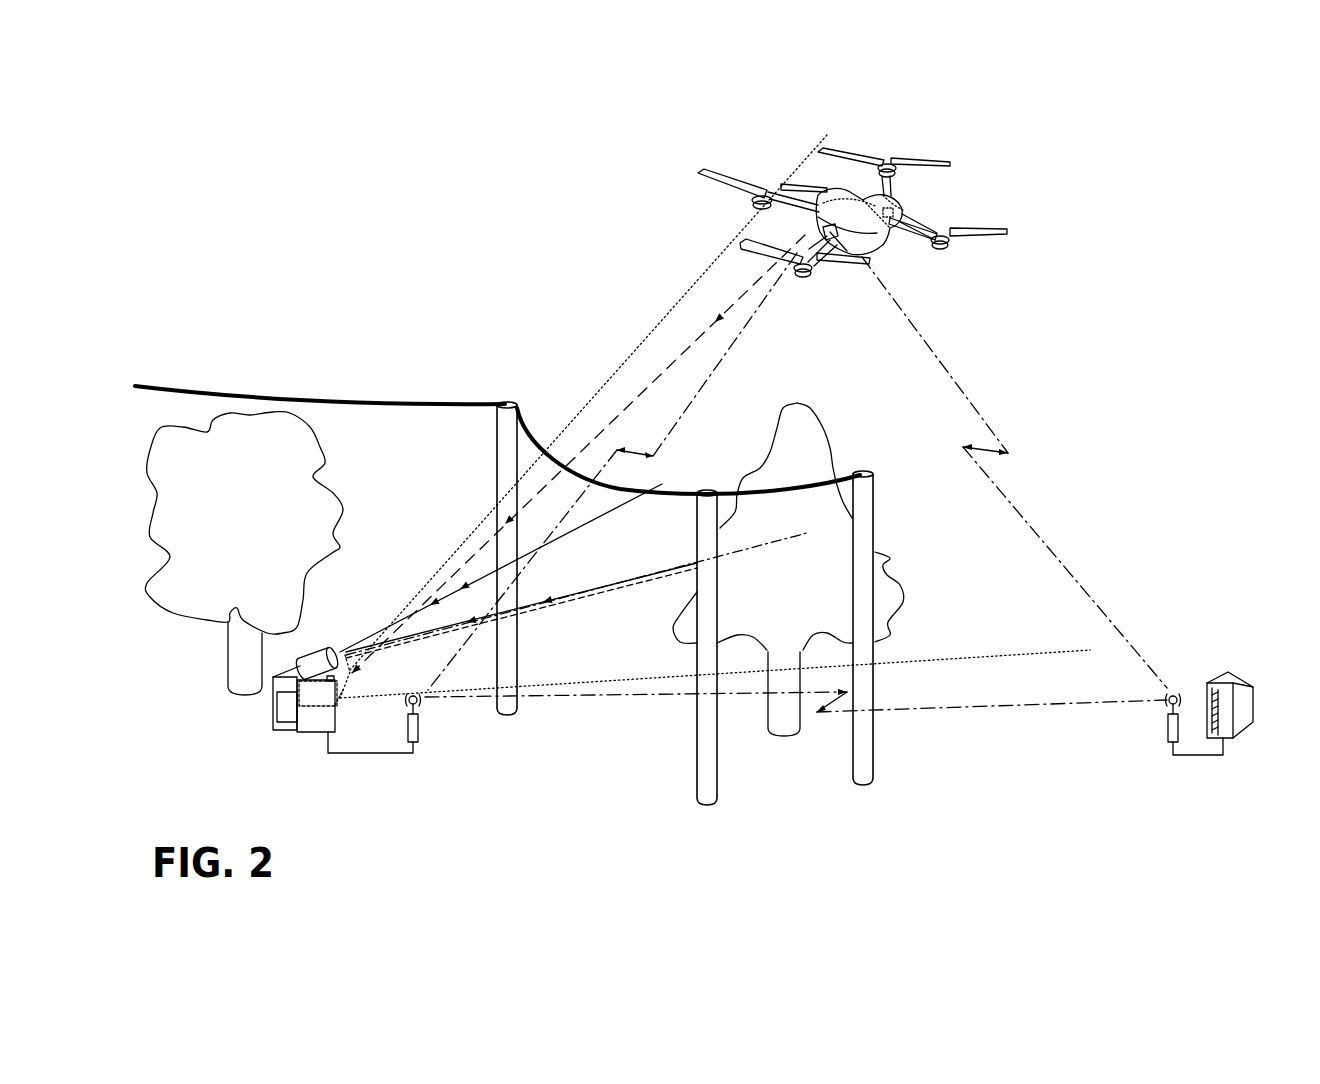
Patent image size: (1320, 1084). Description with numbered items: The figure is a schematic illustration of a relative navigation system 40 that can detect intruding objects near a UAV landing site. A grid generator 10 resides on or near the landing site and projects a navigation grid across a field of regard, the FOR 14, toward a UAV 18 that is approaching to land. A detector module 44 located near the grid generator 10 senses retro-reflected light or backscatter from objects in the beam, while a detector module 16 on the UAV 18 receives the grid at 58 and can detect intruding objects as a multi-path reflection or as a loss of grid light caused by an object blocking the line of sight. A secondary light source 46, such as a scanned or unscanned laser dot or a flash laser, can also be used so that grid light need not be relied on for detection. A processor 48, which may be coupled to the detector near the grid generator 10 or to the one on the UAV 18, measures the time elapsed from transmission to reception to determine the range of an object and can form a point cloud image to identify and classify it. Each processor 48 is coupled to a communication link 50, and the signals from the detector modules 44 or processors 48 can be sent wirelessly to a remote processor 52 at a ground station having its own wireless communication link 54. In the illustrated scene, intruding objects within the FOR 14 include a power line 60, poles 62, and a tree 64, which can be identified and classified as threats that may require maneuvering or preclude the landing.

The grid generator 10 is at (286, 704).
The FOR 14 is at (405, 672).
The detector module 16 is at (843, 265).
The UAV 18 is at (852, 208).
The relative navigation system 40 is at (230, 748).
The detector module 44 is at (828, 243).
The secondary light source 46 is at (337, 678).
The processor 48 is at (903, 202).
The communication link 50 is at (890, 228).
The remote processor 52 is at (1253, 715).
The wireless communication link 54 is at (1165, 737).
The grid reception 58 is at (684, 291).
The power line 60 is at (662, 486).
The poles 62 is at (713, 775).
The tree 64 is at (883, 585).